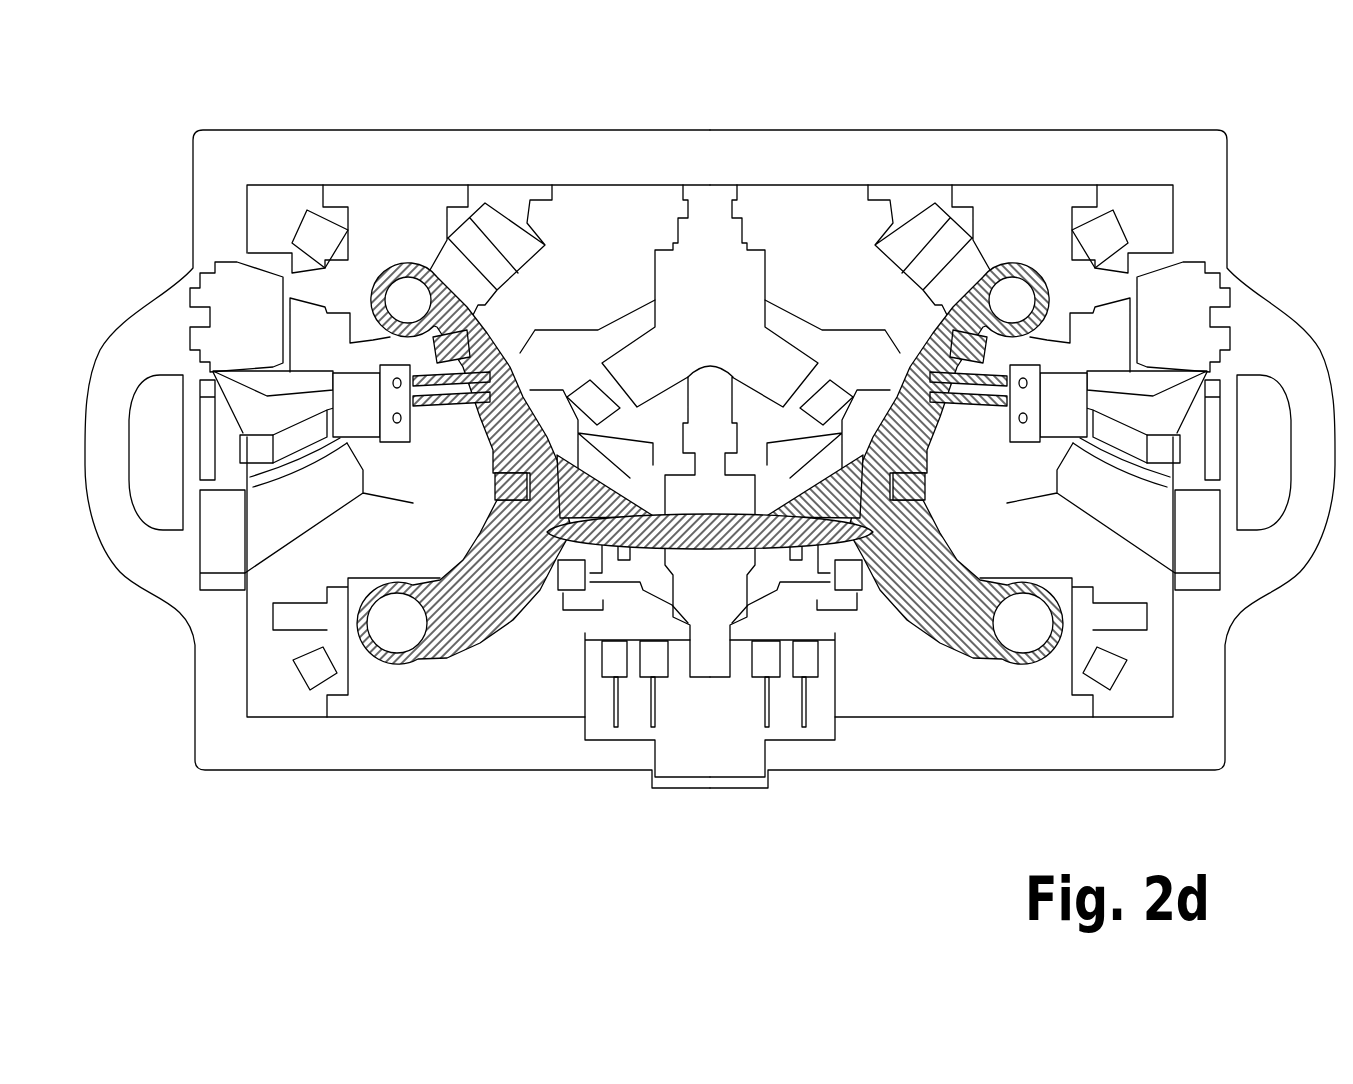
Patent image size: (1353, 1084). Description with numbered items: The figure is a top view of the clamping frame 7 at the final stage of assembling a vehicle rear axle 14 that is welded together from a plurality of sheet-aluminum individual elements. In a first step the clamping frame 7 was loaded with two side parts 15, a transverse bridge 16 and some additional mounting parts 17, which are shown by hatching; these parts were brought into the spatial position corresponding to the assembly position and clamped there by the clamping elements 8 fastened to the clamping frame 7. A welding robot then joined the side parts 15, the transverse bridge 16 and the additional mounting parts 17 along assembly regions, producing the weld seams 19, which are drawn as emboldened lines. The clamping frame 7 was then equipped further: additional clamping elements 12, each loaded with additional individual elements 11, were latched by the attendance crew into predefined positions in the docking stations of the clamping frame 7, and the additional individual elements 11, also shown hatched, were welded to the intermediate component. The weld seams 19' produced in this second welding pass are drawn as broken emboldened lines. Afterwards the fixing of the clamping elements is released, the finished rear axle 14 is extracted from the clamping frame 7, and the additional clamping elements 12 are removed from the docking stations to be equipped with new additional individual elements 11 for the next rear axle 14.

The clamping frame 7 is at (1185, 150).
The clamping elements 8 is at (500, 205).
The additional individual elements 11 is at (968, 320).
The additional clamping elements 12 is at (713, 240).
The rear axle 14 is at (900, 622).
The side parts 15 is at (432, 660).
The transverse bridge 16 is at (710, 525).
The additional mounting parts 17 is at (455, 295).
The weld seams 19 is at (710, 456).
The weld seams 19' is at (710, 456).